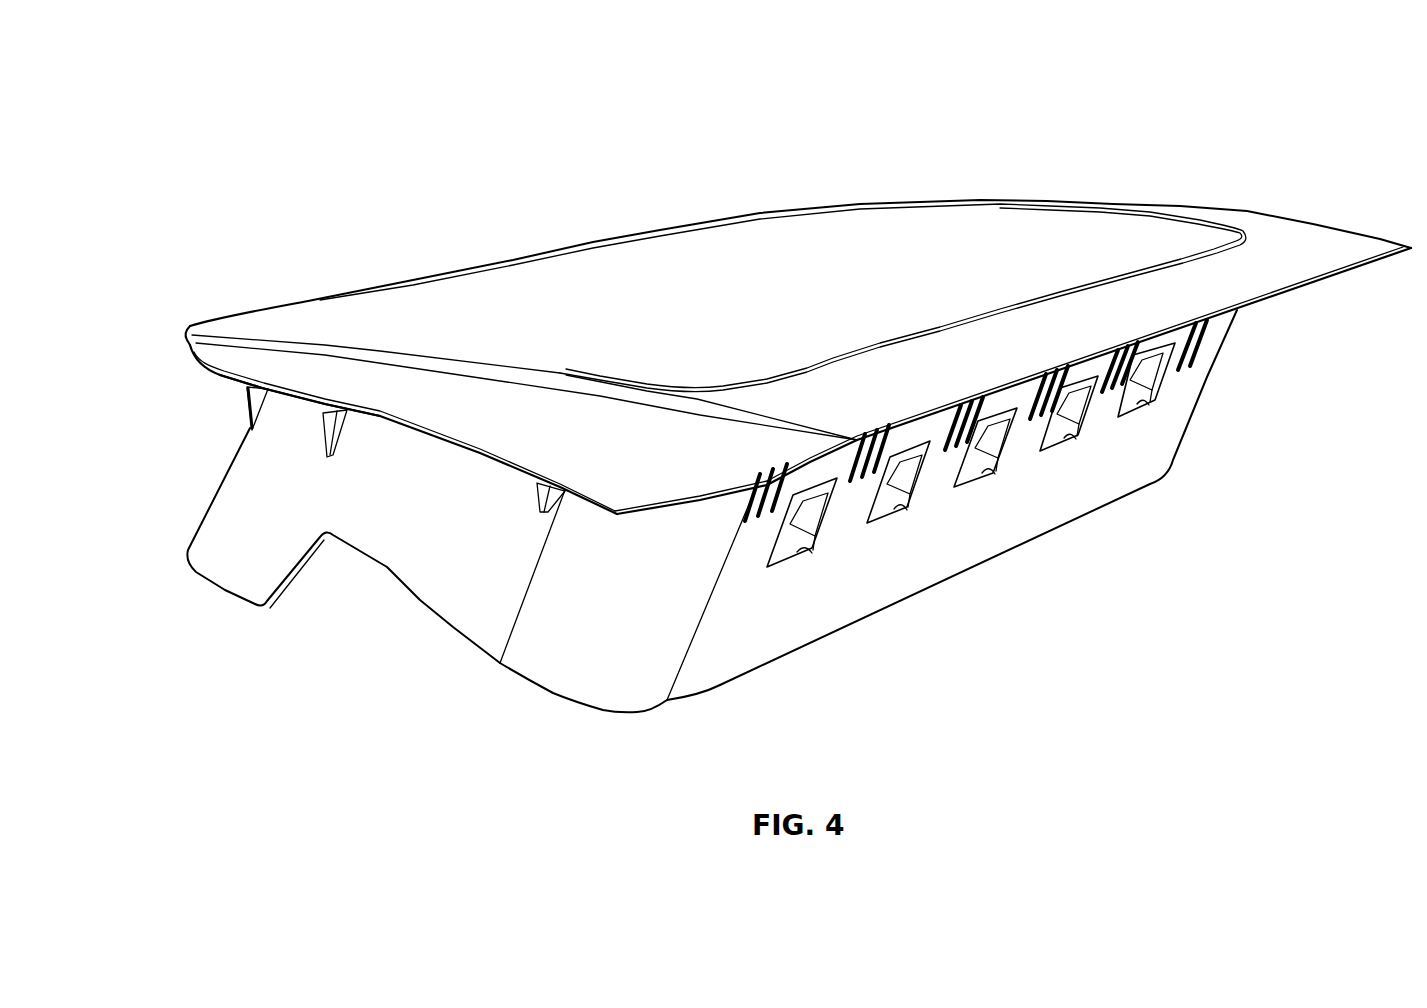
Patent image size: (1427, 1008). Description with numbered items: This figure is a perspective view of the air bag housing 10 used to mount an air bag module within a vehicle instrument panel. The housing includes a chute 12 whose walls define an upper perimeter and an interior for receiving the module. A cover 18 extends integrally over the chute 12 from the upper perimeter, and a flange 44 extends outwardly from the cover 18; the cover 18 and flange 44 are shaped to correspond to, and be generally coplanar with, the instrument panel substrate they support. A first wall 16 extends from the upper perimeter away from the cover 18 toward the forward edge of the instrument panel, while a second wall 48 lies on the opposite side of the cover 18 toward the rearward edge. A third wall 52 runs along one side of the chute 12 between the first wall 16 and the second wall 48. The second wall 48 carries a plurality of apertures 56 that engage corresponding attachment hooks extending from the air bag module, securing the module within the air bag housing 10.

The air bag housing 10 is at (1309, 119).
The chute 12 is at (836, 645).
The first wall 16 is at (214, 475).
The cover 18 is at (757, 310).
The flange 44 is at (372, 410).
The second wall 48 is at (1013, 515).
The third wall 52 is at (440, 577).
The apertures 56 is at (786, 548).